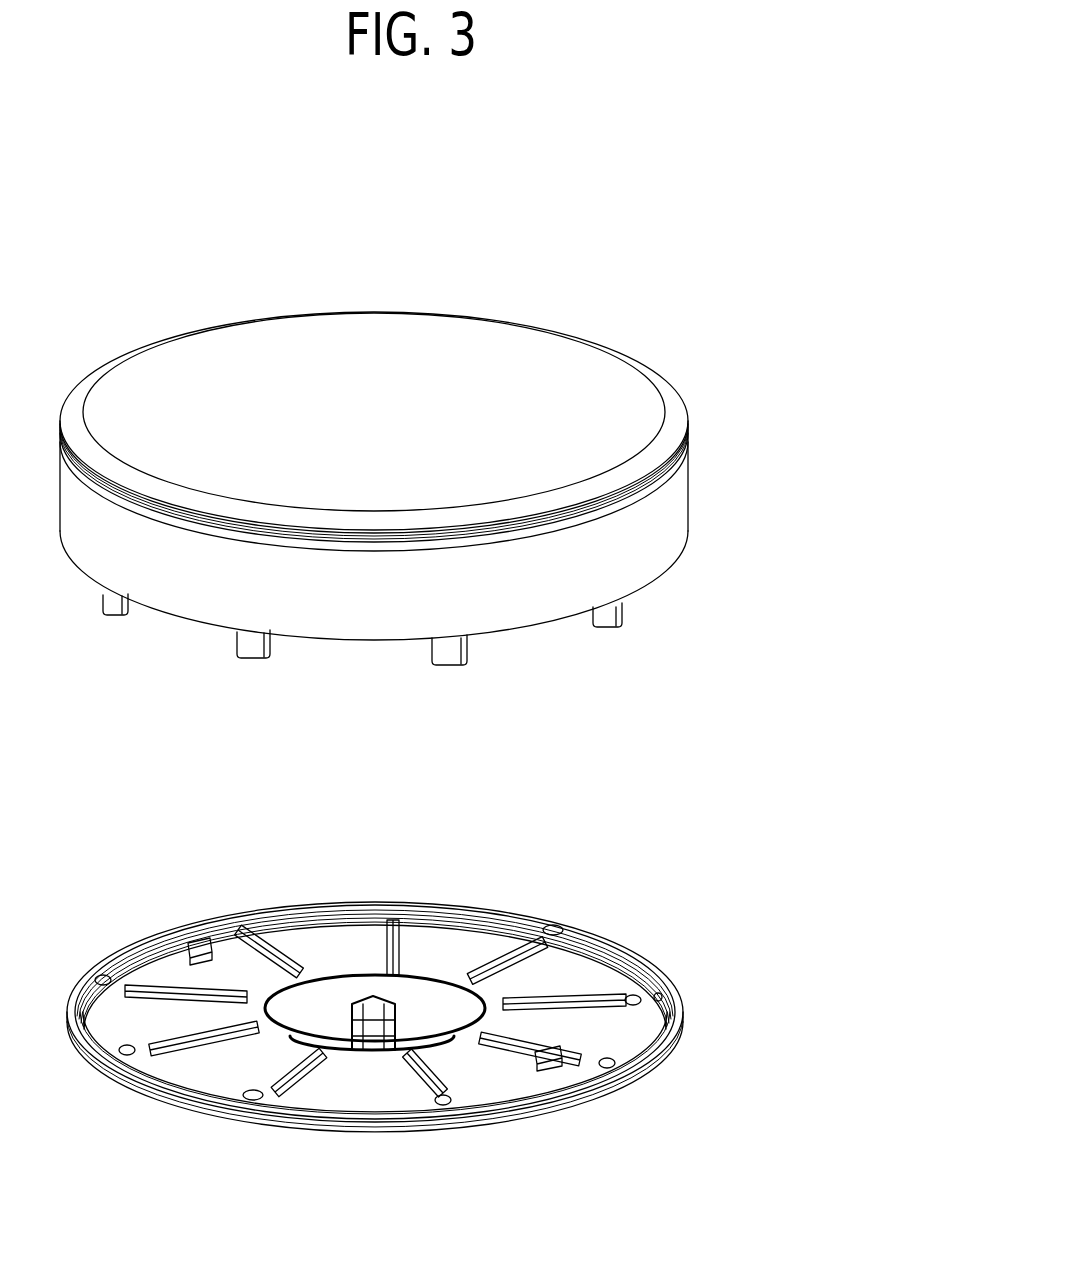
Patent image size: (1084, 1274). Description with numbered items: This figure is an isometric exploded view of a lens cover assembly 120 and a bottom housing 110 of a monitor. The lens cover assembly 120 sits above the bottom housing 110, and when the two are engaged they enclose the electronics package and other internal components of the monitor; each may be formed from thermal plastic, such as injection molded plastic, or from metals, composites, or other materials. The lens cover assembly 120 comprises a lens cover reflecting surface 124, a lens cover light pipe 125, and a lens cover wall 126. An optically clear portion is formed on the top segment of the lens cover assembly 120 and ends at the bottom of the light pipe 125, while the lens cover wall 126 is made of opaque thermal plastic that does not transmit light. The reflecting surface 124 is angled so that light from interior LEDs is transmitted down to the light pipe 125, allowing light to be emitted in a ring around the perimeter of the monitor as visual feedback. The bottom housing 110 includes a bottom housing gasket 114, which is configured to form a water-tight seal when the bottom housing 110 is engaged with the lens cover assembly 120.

The lens cover assembly 120 is at (597, 261).
The lens cover reflecting surface 124 is at (673, 427).
The lens cover light pipe 125 is at (685, 455).
The lens cover wall 126 is at (670, 530).
The bottom housing 110 is at (147, 908).
The bottom housing gasket 114 is at (670, 1003).